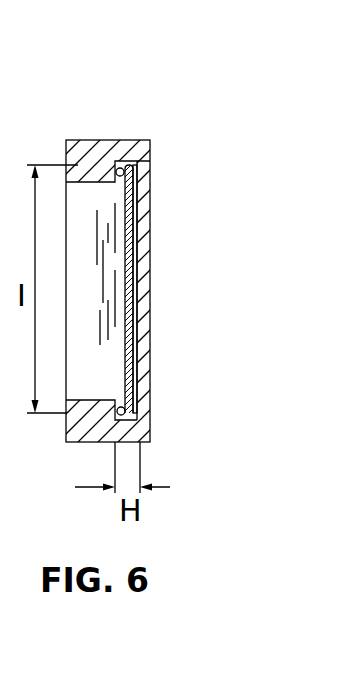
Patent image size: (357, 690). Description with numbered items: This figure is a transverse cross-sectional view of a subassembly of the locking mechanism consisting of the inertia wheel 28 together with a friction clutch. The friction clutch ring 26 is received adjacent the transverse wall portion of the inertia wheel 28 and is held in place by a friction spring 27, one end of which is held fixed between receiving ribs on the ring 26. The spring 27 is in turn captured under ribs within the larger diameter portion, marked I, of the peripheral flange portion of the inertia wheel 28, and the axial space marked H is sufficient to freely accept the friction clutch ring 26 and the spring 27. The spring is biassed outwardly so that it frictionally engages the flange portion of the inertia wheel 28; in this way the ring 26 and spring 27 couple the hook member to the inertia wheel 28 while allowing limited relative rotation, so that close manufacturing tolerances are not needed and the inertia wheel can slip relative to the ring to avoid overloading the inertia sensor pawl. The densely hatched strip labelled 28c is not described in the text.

The inertia wheel 28 is at (102, 134).
The elastic support strip 28c is at (130, 271).
The friction spring 27 is at (124, 170).
The friction clutch ring 26 is at (133, 296).